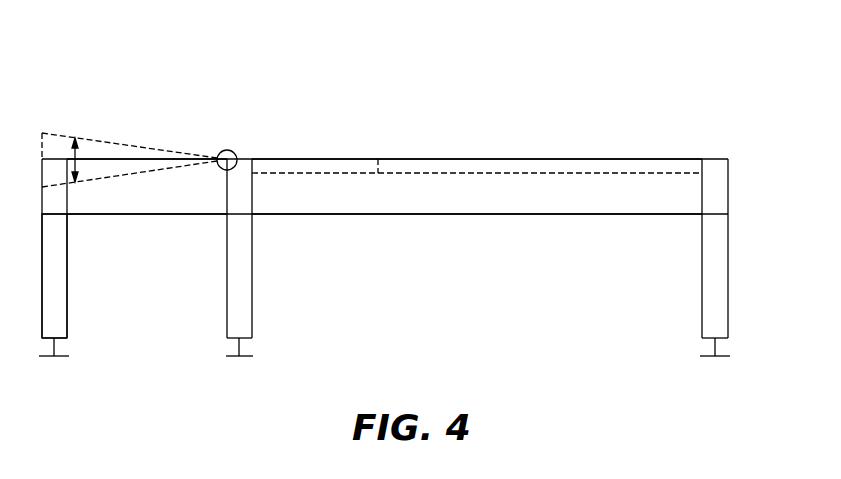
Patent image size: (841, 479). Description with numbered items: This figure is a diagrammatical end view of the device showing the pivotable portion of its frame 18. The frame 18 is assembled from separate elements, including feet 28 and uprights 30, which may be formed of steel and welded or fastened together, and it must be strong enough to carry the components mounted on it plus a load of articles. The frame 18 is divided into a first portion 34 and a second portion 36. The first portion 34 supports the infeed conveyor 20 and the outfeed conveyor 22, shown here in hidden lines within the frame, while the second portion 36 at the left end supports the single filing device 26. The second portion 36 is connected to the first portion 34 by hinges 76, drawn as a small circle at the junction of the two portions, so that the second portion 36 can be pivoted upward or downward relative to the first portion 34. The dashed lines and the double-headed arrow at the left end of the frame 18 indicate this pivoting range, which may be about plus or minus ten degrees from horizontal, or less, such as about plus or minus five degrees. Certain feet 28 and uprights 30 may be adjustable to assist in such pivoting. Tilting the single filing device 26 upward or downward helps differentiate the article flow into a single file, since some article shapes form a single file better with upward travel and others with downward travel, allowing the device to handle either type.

The frame 18 is at (720, 107).
The infeed conveyor 20 is at (437, 175).
The outfeed conveyor 22 is at (293, 175).
The single filing device 26 is at (135, 110).
The feet 28 is at (63, 357).
The uprights 30 is at (67, 245).
The first portion 34 is at (468, 215).
The second portion 36 is at (146, 216).
The hinges 76 is at (229, 150).